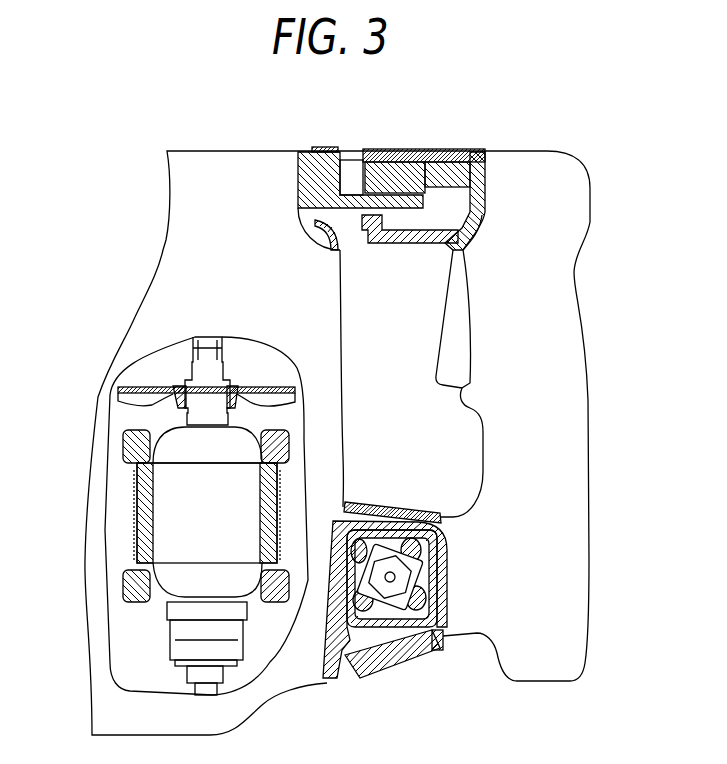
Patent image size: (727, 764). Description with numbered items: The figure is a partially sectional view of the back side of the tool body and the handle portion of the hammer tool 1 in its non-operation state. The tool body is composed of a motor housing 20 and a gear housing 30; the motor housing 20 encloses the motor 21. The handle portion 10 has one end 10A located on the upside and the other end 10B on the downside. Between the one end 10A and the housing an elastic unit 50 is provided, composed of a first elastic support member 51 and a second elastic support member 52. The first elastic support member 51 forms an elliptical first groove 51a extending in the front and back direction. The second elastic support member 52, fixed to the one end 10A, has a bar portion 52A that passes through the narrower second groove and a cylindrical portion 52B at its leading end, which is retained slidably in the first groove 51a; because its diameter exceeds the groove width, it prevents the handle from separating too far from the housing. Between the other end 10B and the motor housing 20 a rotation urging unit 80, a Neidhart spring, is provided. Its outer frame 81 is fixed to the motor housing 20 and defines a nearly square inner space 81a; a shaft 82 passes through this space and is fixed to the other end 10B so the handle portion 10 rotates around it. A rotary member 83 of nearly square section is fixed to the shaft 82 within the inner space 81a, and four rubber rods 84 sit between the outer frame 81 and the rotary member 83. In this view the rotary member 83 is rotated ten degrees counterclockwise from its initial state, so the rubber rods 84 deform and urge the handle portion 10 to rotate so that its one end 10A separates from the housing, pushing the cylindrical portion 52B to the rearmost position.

The hammer tool 1 is at (619, 153).
The handle portion 10 is at (545, 396).
The one end 10A is at (452, 150).
The other end 10B is at (443, 650).
The motor housing 20 is at (127, 705).
The electric motor 21 is at (192, 518).
The gear housing 30 is at (250, 170).
The elastic unit 50 is at (400, 237).
The first elastic support member 51 is at (296, 158).
The first groove 51a is at (353, 185).
The second elastic support member 52 is at (485, 151).
The bar portion 52A is at (430, 160).
The cylindrical portion 52B is at (380, 165).
The rotation urging unit 80 is at (414, 653).
The outer frame 81 is at (327, 655).
The inner space 81a is at (382, 612).
The shaft 82 is at (388, 562).
The rotary member 83 is at (365, 545).
The rubber rods 84 is at (440, 514).